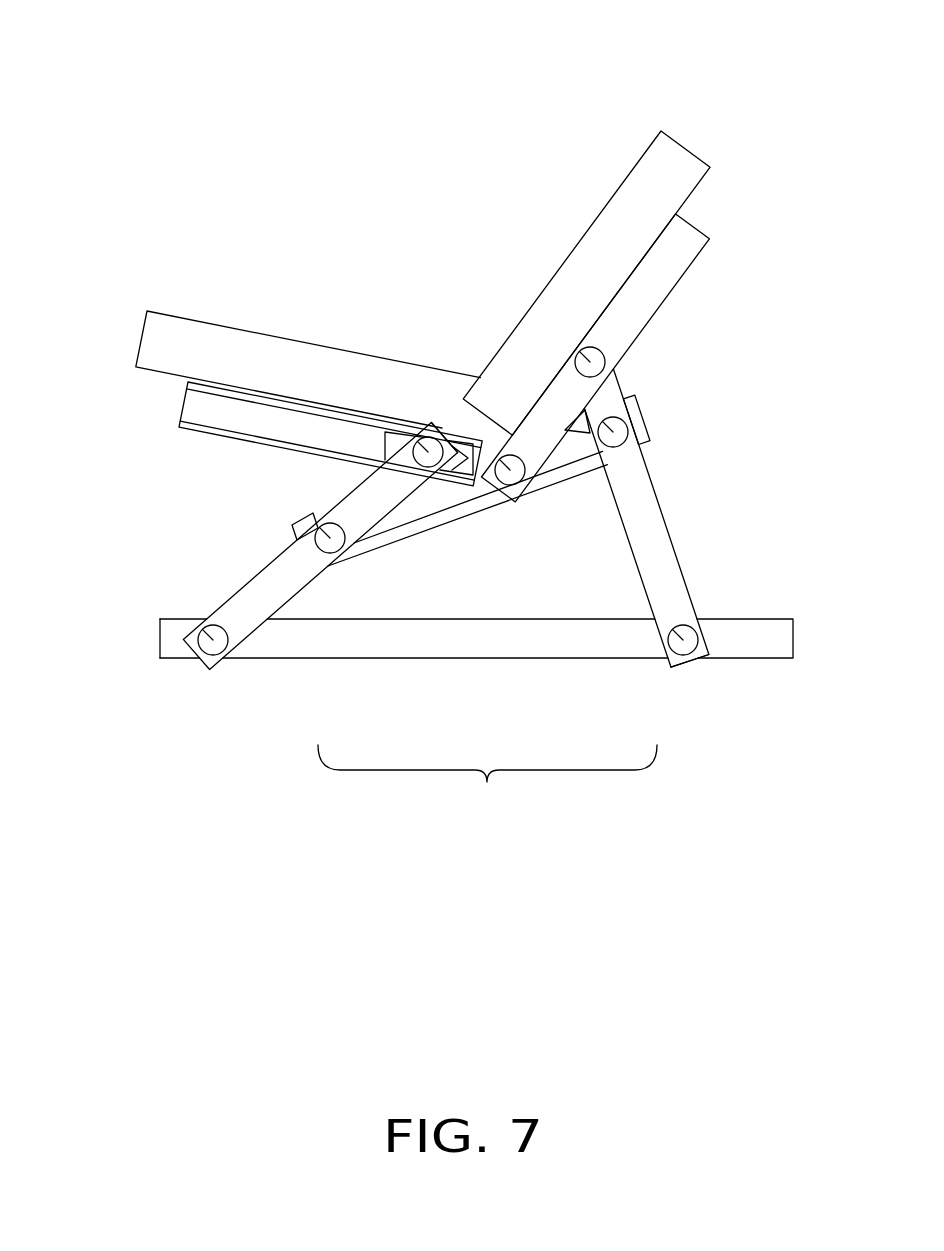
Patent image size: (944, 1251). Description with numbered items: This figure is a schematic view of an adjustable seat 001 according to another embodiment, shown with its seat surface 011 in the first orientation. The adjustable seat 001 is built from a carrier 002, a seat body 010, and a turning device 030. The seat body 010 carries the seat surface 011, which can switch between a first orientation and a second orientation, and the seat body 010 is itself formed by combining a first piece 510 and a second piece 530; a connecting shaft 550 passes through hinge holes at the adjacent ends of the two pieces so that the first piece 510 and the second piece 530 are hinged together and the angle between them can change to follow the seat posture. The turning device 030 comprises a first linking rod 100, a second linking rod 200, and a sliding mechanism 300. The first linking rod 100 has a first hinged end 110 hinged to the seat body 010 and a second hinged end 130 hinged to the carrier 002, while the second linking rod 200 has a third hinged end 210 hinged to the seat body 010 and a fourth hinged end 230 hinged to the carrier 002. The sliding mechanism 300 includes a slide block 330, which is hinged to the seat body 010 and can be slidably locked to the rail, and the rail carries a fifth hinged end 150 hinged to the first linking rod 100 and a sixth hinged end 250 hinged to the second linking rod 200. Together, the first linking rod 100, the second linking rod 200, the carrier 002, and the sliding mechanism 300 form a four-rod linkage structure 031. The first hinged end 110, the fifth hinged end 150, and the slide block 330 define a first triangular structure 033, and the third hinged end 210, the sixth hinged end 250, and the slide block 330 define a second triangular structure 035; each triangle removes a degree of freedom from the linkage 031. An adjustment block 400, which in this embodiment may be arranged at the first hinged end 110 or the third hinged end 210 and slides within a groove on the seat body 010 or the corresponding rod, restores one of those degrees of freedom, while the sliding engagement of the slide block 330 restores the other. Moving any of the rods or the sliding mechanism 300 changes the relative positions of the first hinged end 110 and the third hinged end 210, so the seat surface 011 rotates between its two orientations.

The adjustable seat 001 is at (533, 42).
The carrier 002 is at (535, 640).
The seat body 010 is at (675, 337).
The seat surface 011 is at (229, 325).
The turning device 030 is at (704, 538).
The four-rod linkage structure 031 is at (487, 785).
The first triangular structure 033 is at (343, 485).
The second triangular structure 035 is at (665, 419).
The first linking rod 100 is at (304, 568).
The first hinged end 110 is at (403, 433).
The second hinged end 130 is at (218, 657).
The fifth hinged end 150 is at (316, 533).
The second linking rod 200 is at (662, 592).
The third hinged end 210 is at (578, 352).
The fourth hinged end 230 is at (687, 657).
The sixth hinged end 250 is at (628, 441).
The sliding mechanism 300 is at (427, 508).
The slide block 330 is at (547, 467).
The adjustment block 400 is at (367, 425).
The first piece 510 is at (667, 266).
The second piece 530 is at (271, 430).
The connecting shaft 550 is at (503, 487).